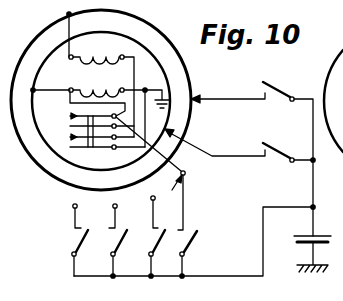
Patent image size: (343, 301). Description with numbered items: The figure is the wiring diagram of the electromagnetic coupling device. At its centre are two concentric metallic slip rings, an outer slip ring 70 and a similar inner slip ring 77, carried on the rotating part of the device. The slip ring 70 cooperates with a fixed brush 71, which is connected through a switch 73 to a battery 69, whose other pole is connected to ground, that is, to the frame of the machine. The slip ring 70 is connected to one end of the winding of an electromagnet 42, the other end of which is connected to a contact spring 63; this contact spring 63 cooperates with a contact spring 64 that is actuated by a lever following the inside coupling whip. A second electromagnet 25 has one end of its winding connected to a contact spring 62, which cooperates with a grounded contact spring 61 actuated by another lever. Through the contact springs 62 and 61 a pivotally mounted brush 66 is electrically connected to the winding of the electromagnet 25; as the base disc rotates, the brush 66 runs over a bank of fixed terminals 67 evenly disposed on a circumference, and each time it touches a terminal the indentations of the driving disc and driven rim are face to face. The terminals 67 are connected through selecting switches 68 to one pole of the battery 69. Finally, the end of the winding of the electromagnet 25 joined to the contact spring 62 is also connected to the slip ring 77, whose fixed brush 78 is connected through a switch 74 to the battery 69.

The slip ring 70 is at (189, 77).
The slip ring 77 is at (68, 164).
The fixed brush 71 is at (200, 101).
The fixed brush 78 is at (172, 134).
The electromagnet 42 is at (96, 51).
The electromagnet 25 is at (96, 84).
The contact spring 61 is at (84, 116).
The contact spring 62 is at (93, 127).
The contact spring 63 is at (93, 138).
The contact spring 64 is at (106, 140).
The brush 66 is at (186, 172).
The fixed terminals 67 is at (126, 212).
The switches 68 is at (112, 240).
The battery 69 is at (299, 243).
The switch 73 is at (272, 87).
The switch 74 is at (273, 149).